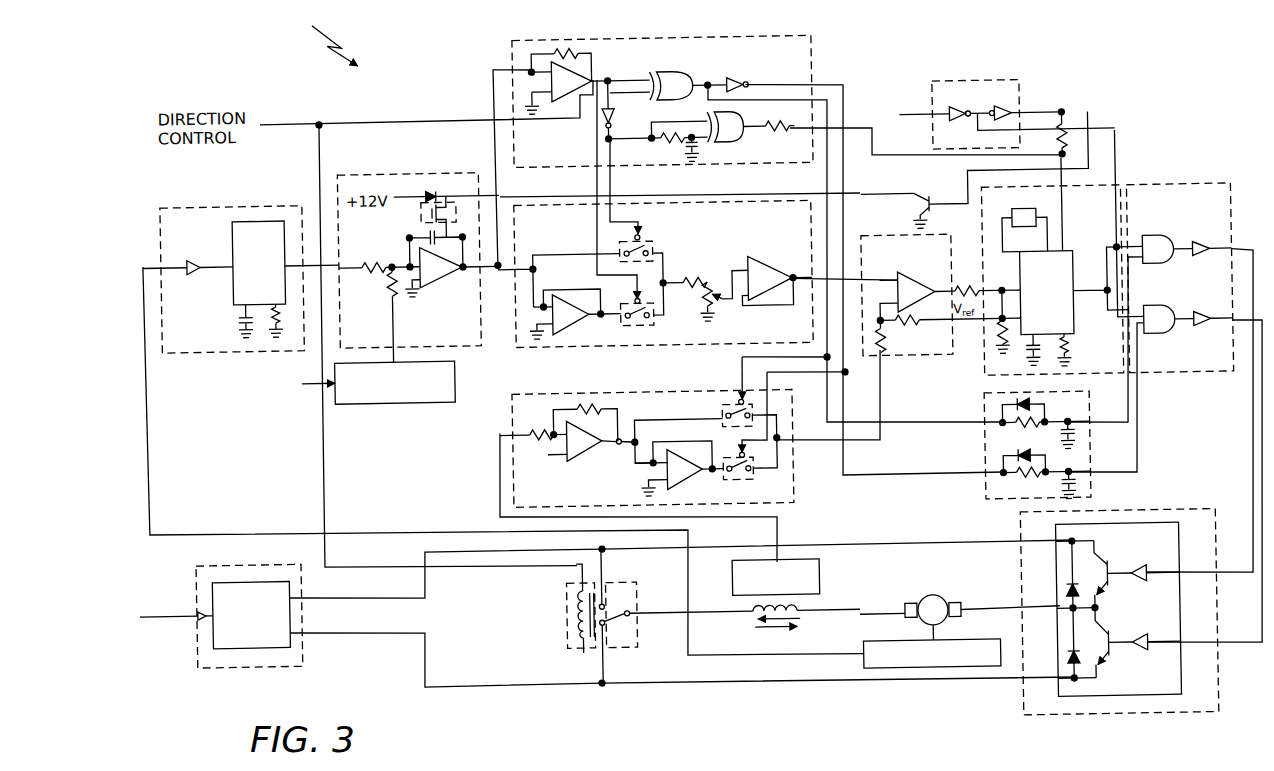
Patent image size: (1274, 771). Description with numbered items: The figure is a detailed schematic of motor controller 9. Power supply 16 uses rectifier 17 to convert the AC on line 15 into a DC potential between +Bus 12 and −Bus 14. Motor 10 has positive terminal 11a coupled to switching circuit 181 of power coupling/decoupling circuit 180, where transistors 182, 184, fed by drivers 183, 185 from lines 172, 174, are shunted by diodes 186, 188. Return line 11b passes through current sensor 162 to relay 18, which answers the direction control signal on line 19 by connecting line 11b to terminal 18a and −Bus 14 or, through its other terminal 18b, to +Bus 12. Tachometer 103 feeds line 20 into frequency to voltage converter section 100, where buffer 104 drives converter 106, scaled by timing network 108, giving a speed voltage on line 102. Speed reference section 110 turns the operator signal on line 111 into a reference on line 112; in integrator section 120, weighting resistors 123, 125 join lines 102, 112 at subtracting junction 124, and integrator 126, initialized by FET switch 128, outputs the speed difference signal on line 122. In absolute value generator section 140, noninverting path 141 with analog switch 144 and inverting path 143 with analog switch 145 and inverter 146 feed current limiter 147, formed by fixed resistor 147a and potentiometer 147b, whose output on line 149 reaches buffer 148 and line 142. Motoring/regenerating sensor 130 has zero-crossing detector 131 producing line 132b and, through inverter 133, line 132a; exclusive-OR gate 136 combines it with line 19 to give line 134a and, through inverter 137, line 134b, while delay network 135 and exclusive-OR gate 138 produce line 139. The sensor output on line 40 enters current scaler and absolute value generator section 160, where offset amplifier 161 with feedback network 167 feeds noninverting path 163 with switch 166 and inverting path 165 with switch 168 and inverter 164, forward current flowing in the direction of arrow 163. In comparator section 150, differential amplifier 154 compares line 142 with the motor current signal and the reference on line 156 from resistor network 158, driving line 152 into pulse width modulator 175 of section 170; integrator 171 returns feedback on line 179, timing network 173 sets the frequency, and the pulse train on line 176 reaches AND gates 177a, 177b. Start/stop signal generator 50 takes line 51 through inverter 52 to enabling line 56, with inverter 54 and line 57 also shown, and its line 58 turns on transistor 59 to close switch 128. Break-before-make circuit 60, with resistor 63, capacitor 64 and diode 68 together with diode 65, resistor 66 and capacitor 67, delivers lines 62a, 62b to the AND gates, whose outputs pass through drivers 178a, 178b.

The motor controller 9 is at (326, 39).
The motor 10 is at (933, 595).
The positive terminal 11a is at (982, 610).
The return line 11b is at (873, 610).
The +Bus 12 is at (427, 590).
The −Bus 14 is at (426, 636).
The line 15 is at (183, 615).
The power supply 16 is at (242, 563).
The rectifier 17 is at (243, 583).
The relay 18 is at (566, 609).
The terminal 18a is at (617, 651).
The relay contact 18b is at (617, 598).
The line 19 is at (306, 116).
The line 20 is at (682, 655).
The line 40 is at (778, 530).
The start/stop signal generator 50 is at (963, 80).
The line 51 is at (908, 118).
The inverter 52 is at (963, 106).
The inverter 54 is at (1003, 106).
The line 56 is at (1120, 196).
The supply line 57 is at (860, 192).
The line 58 is at (1038, 113).
The transistor 59 is at (912, 203).
The break-before-make circuit 60 is at (982, 414).
The line 62a is at (1096, 429).
The line 62b is at (1112, 480).
The resistor 63 is at (1022, 426).
The capacitor 64 is at (1059, 428).
The diode 65 is at (1034, 405).
The resistor 66 is at (1024, 482).
The capacitor 67 is at (1055, 479).
The diode 68 is at (1017, 455).
The frequency to voltage converter section 100 is at (214, 202).
The line 102 is at (314, 262).
The tachometer 103 is at (998, 640).
The buffer 104 is at (190, 263).
The frequency to voltage converter 106 is at (233, 240).
The timing network 108 is at (230, 326).
The speed reference section 110 is at (456, 384).
The line 111 is at (303, 384).
The line 112 is at (394, 345).
The integrator section 120 is at (382, 176).
The line 122 is at (495, 272).
The weighting resistor 123 is at (355, 266).
The subtracting junction 124 is at (378, 273).
The weighting resistor 125 is at (385, 291).
The integrator 126 is at (452, 285).
The FET switch 128 is at (420, 208).
The motoring/regenerating sensor 130 is at (580, 36).
The zero-crossing detector 131 is at (567, 84).
The line 132a is at (628, 213).
The line 132b is at (601, 242).
The inverter 133 is at (622, 113).
The line 134a is at (832, 115).
The line 134b is at (850, 87).
The delay network 135 is at (671, 144).
The exclusive-OR gate 136 is at (678, 74).
The inverter 137 is at (737, 79).
The exclusive-OR gate 138 is at (745, 141).
The line 139 is at (893, 160).
The absolute value generator section 140 is at (552, 345).
The noninverting circuit path 141 is at (570, 253).
The line 142 is at (816, 274).
The inverting circuit path 143 is at (612, 321).
The analog switch 144 is at (660, 237).
The analog switch 145 is at (648, 336).
The inverter 146 is at (556, 303).
The motor current limiter 147 is at (721, 272).
The fixed resistor 147a is at (687, 302).
The potentiometer 147b is at (717, 300).
The buffer 148 is at (766, 258).
The line 149 is at (744, 276).
The comparator section 150 is at (890, 236).
The line 152 is at (954, 288).
The differential amplifier 154 is at (931, 276).
The line 156 is at (936, 324).
The resistor network 158 is at (992, 335).
The current scaler and absolute value generator section 160 is at (545, 388).
The offset amplifier 161 is at (574, 456).
The current sensor 162 is at (840, 446).
The noninverting path 163 is at (662, 421).
The inverter 164 is at (688, 480).
The inverting path 165 is at (648, 471).
The analog switch 166 is at (724, 407).
The feedback network 167 is at (572, 408).
The analog switch 168 is at (738, 481).
The pulse width modulator section 170 is at (1158, 183).
The integrator 171 is at (1008, 215).
The line 172 is at (1253, 437).
The resistor/capacitor timing network 173 is at (1049, 347).
The line 174 is at (1218, 651).
The pulse width modulator 175 is at (1065, 250).
The line 176 is at (1088, 293).
The AND gate 177a is at (1152, 236).
The AND gate 177b is at (1163, 334).
The driver 178a is at (1200, 243).
The driver 178b is at (1200, 313).
The line 179 is at (1048, 240).
The power coupling/decoupling circuit 180 is at (1180, 508).
The switching circuit 181 is at (1178, 555).
The switching transistor 182 is at (1098, 559).
The driver 183 is at (1145, 566).
The switching transistor 184 is at (1102, 630).
The driver 185 is at (1145, 634).
The diode 186 is at (1072, 581).
The diode 188 is at (1070, 649).